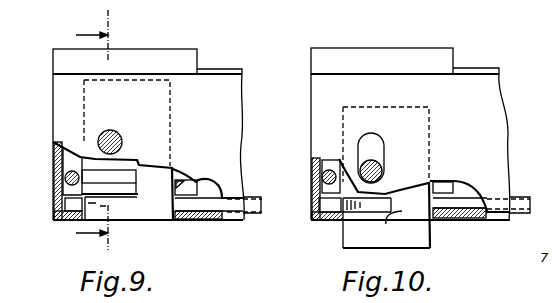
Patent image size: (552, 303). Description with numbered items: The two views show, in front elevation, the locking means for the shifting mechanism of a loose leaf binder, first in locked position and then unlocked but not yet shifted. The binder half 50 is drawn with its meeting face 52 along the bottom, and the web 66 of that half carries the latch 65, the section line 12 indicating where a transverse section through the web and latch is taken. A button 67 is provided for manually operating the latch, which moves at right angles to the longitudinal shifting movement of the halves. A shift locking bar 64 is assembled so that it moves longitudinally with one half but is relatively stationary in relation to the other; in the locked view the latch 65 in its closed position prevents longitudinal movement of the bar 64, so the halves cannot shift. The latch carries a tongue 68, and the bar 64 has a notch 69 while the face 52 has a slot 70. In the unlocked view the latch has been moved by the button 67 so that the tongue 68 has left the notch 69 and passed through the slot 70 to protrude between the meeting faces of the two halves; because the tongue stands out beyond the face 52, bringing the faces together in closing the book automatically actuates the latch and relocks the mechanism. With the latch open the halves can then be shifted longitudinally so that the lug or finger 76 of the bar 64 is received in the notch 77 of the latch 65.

In FIG. 9, the section line 12 is at (92, 134).
In FIG. 10, the frame member 50 is at (473, 97).
In FIG. 9, the meeting face 52 is at (192, 220).
In FIG. 9, the shift locking bar 64 is at (212, 207).
In FIG. 10, the shift locking bar 64 is at (473, 207).
In FIG. 9, the latch 65 is at (157, 178).
In FIG. 10, the latch 65 is at (412, 203).
In FIG. 9, the web 66 is at (65, 105).
In FIG. 9, the button 67 is at (115, 131).
In FIG. 10, the button 67 is at (358, 165).
In FIG. 9, the tongue 68 is at (133, 215).
In FIG. 10, the tongue 68 is at (356, 235).
In FIG. 9, the notch 69 is at (97, 202).
In FIG. 10, the notch 69 is at (341, 218).
In FIG. 9, the slot 70 is at (82, 217).
In FIG. 10, the slot 70 is at (348, 217).
In FIG. 9, the lug 76 is at (72, 205).
In FIG. 10, the lug 76 is at (329, 203).
In FIG. 9, the notch 77 is at (133, 182).
In FIG. 10, the notch 77 is at (386, 224).